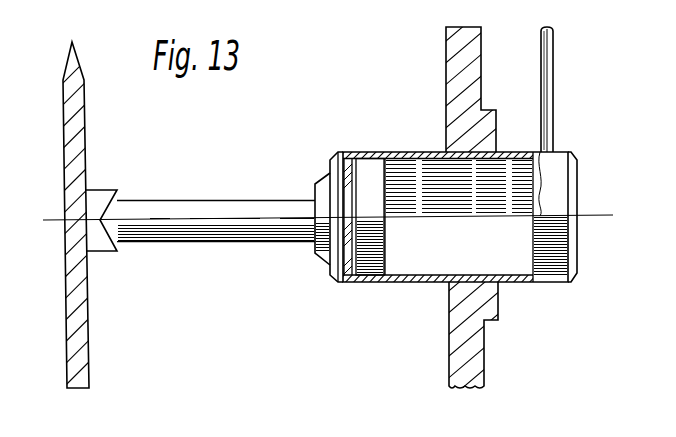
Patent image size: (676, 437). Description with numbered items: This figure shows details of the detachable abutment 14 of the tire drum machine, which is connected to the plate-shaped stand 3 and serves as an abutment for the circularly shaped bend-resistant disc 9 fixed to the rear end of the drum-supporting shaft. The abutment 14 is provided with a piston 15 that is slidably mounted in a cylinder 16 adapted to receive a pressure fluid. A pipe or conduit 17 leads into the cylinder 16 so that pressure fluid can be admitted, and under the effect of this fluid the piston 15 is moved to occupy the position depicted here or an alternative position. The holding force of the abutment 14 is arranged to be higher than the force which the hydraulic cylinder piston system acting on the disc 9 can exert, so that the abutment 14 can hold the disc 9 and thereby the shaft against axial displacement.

The stand 3 is at (462, 331).
The bend-resistant disc 9 is at (78, 317).
The abutment 14 is at (203, 207).
The piston 15 is at (375, 167).
The cylinder 16 is at (415, 152).
The pipe or conduit 17 is at (553, 115).